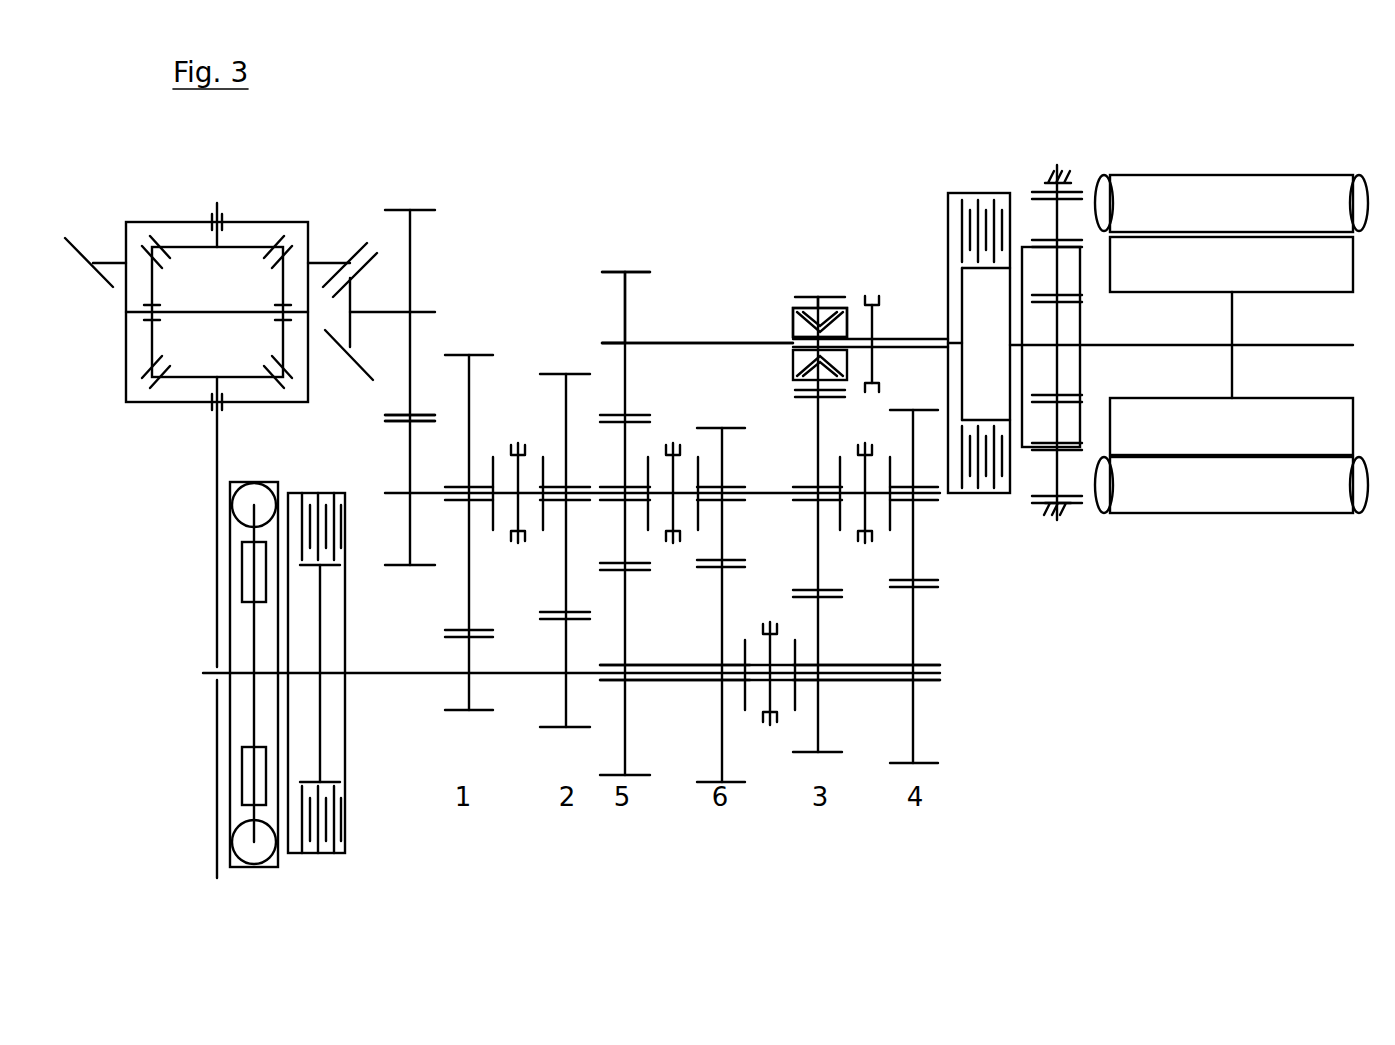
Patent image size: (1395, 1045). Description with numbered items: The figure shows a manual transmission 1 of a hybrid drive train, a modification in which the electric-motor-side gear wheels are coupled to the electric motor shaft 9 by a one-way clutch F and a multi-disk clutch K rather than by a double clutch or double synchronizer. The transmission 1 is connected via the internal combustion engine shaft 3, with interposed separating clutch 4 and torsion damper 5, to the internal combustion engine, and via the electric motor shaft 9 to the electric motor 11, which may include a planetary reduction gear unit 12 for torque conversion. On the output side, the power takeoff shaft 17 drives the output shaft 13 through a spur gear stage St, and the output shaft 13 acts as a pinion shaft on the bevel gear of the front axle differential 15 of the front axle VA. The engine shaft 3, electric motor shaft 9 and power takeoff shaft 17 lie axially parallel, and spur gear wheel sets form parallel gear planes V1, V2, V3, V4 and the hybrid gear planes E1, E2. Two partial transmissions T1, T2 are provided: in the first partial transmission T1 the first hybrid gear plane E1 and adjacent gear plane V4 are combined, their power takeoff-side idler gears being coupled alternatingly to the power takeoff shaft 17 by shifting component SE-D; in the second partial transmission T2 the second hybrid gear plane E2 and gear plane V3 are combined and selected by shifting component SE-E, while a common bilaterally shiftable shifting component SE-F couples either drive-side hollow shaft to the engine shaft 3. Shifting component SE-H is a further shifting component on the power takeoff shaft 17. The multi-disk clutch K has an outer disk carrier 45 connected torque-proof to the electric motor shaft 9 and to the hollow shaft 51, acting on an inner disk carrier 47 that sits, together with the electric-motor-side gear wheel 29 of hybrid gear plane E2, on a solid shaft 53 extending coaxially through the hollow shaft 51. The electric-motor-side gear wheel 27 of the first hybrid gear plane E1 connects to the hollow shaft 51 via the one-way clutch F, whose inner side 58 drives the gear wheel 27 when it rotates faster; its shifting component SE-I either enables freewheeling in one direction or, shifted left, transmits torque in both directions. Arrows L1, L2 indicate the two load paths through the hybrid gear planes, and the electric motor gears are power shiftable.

The manual transmission 1 is at (608, 185).
The internal combustion engine shaft 3 is at (401, 672).
The separating clutch 4 is at (320, 855).
The torsion damper 5 is at (252, 868).
The electric motor shaft 9 is at (1013, 350).
The electric motor 11 is at (1313, 175).
The planetary reduction gear unit 12 is at (1040, 185).
The output shaft 13 is at (412, 305).
The front axle differential 15 is at (272, 222).
The power takeoff shaft 17 is at (398, 490).
The electric motor-side idler gear wheel 27 is at (838, 312).
The electric motor-side idler gear wheel 29 is at (605, 272).
The outer disk carrier 45 is at (1010, 228).
The inner disk carrier 47 is at (962, 315).
The hollow shaft 51 is at (916, 336).
The solid shaft 53 is at (698, 341).
The one-way clutch inner side 58 is at (793, 325).
The spur gear stage St is at (410, 368).
The front axle VA is at (217, 467).
The multi-disk clutch K is at (1117, 261).
The first hybrid gear plane E1 is at (819, 493).
The second hybrid gear plane E2 is at (625, 504).
The first load path L1 is at (780, 250).
The second load path L2 is at (590, 250).
The one-way clutch F is at (765, 326).
The gear plane V1 is at (469, 513).
The gear plane V2 is at (565, 530).
The gear plane V3 is at (721, 585).
The gear plane V4 is at (914, 567).
The shift element H SE-H is at (518, 469).
The shifting component SE-E is at (673, 545).
The shifting component SE-F is at (770, 728).
The shifting component SE-D is at (877, 540).
The shifting component SE-I is at (875, 296).
The first partial transmission T1 is at (940, 808).
The second partial transmission T2 is at (755, 808).